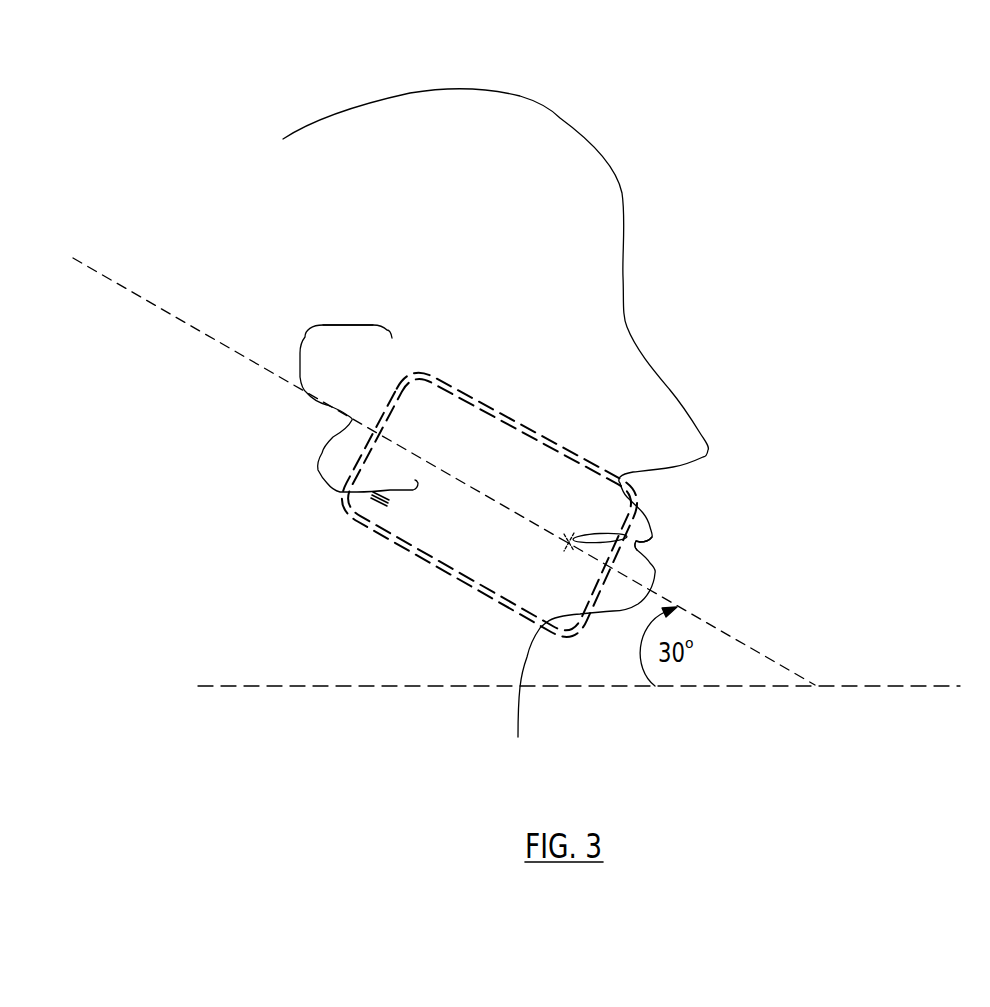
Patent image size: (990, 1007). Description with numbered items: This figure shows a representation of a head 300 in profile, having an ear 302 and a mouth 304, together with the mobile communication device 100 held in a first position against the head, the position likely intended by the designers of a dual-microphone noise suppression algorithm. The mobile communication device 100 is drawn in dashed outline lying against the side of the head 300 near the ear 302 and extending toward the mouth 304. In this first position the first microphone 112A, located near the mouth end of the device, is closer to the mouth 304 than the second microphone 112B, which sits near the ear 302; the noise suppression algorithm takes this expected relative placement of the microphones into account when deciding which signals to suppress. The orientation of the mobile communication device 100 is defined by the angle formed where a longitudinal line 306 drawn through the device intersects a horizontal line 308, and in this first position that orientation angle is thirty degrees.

The head 300 is at (681, 130).
The ear 302 is at (367, 323).
The mouth 304 is at (682, 527).
The longitudinal line 306 is at (107, 277).
The horizontal line 308 is at (255, 687).
The mobile communication device 100 is at (457, 385).
The first microphone 112A is at (570, 542).
The second microphone 112B is at (372, 495).